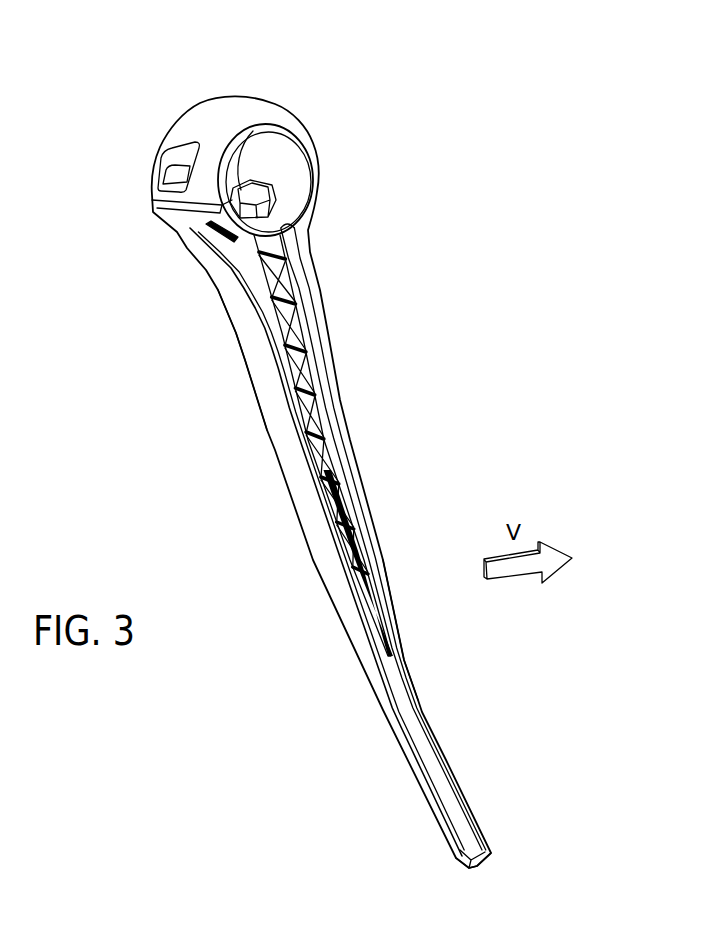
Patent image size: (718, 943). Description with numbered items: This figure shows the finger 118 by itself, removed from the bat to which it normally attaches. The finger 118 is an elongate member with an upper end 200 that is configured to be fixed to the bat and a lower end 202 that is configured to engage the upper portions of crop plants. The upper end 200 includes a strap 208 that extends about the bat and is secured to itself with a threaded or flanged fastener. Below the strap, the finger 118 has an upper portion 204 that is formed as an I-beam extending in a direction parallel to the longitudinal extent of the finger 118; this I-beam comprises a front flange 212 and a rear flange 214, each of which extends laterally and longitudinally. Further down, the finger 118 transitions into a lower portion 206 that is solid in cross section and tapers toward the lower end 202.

The upper end 200 is at (307, 56).
The strap 208 is at (228, 123).
The rear flange 214 is at (247, 327).
The front flange 212 is at (325, 334).
The upper portion 204 is at (392, 404).
The lower portion 206 is at (471, 667).
The lower end 202 is at (533, 832).
The finger 118 is at (210, 508).